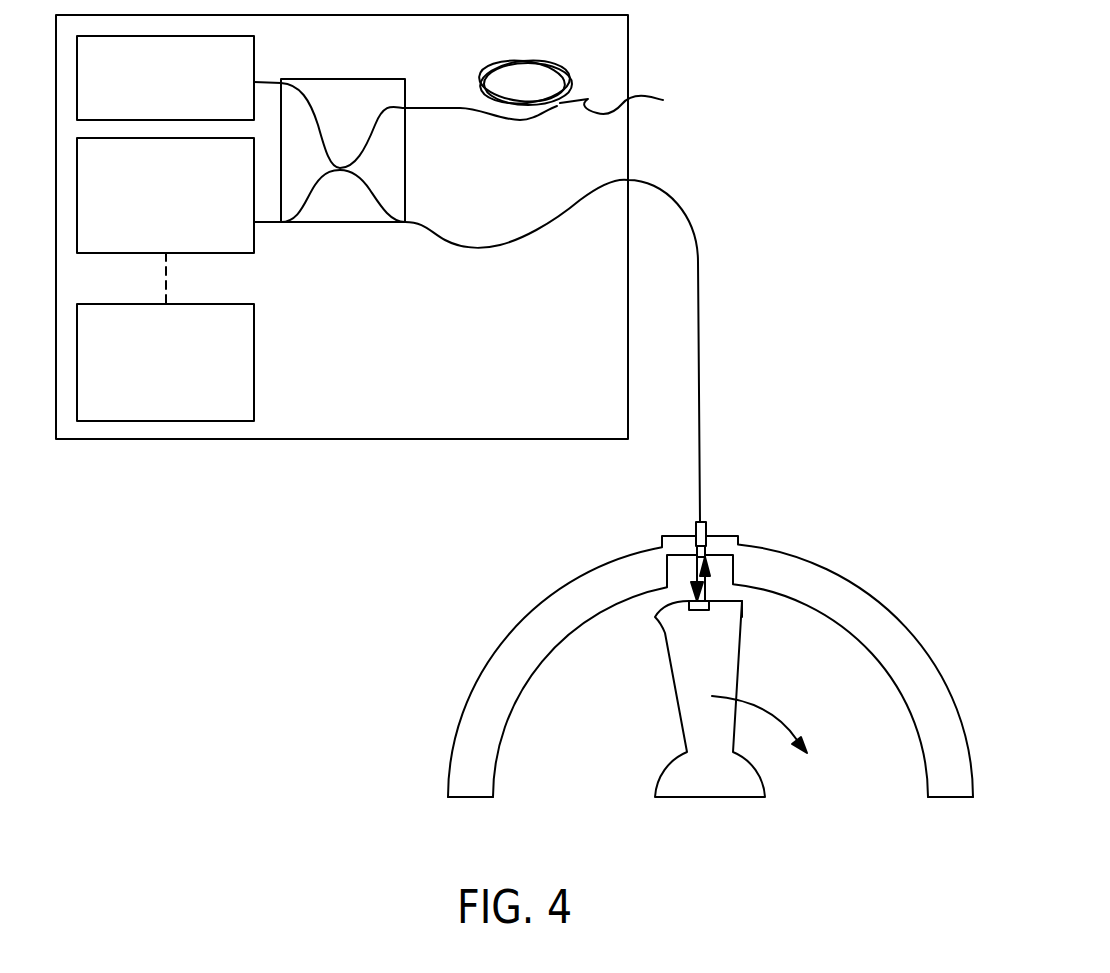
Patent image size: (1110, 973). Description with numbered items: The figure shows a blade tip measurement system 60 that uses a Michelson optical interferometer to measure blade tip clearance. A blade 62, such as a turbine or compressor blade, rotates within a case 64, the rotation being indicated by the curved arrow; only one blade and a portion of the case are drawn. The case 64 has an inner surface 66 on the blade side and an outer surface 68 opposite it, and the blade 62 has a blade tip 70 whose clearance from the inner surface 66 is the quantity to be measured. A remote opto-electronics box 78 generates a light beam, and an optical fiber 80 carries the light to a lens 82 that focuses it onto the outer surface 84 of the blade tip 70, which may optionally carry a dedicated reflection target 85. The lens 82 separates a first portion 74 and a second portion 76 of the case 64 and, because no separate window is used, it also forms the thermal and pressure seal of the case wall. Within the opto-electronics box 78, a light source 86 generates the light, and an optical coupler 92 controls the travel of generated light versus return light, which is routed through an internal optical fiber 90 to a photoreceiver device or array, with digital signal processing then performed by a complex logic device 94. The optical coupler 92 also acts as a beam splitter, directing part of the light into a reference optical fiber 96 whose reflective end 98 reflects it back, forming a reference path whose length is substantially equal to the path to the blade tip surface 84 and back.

The blade tip measurement system 60 is at (803, 135).
The blade 62 is at (707, 722).
The case 64 is at (470, 762).
The inner surface 66 is at (926, 770).
The outer surface 68 is at (947, 685).
The blade tip 70 is at (685, 638).
The first portion 74 is at (607, 587).
The second portion 76 is at (763, 576).
The opto-electronics box 78 is at (470, 52).
The optical fiber 80 is at (694, 232).
The lens 82 is at (706, 527).
The outer surface of the blade tip 84 is at (742, 617).
The reflection target 85 is at (700, 610).
The light source 86 is at (171, 111).
The internal optical fiber 90 is at (270, 223).
The optical coupler 92 is at (349, 211).
The complex logic device 94 is at (171, 244).
The reference optical fiber 96 is at (460, 108).
The reflective end 98 is at (623, 103).